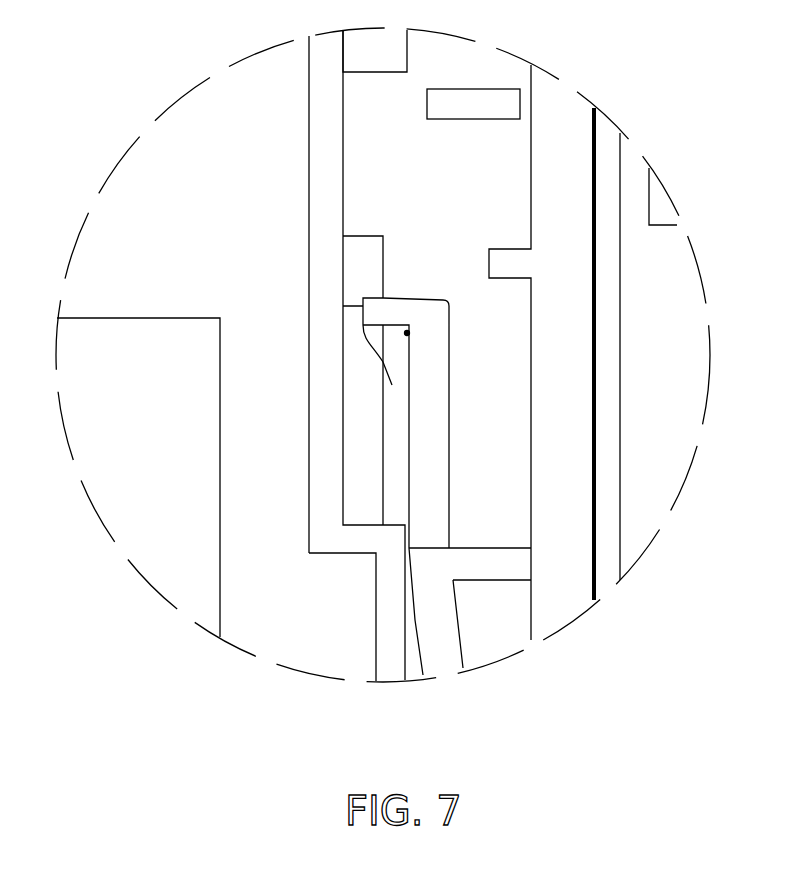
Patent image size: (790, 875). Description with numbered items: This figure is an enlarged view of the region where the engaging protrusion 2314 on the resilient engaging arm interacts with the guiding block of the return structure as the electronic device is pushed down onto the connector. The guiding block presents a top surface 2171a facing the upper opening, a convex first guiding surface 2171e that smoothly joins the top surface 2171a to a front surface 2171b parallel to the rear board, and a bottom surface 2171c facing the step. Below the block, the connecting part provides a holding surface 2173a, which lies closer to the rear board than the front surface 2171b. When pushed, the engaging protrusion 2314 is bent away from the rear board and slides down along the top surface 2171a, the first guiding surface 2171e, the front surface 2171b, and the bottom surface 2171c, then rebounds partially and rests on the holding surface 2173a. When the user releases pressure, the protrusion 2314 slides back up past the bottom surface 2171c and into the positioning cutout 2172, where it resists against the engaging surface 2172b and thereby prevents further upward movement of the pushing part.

The top surface 2171a is at (368, 235).
The front surface 2171b is at (349, 317).
The bottom surface 2171c is at (353, 318).
The first guiding surface 2171e is at (355, 243).
The positioning cutout 2172 is at (375, 337).
The engaging surface 2172b is at (382, 297).
The holding surface 2173a is at (362, 468).
The engaging protrusion 2314 is at (380, 310).